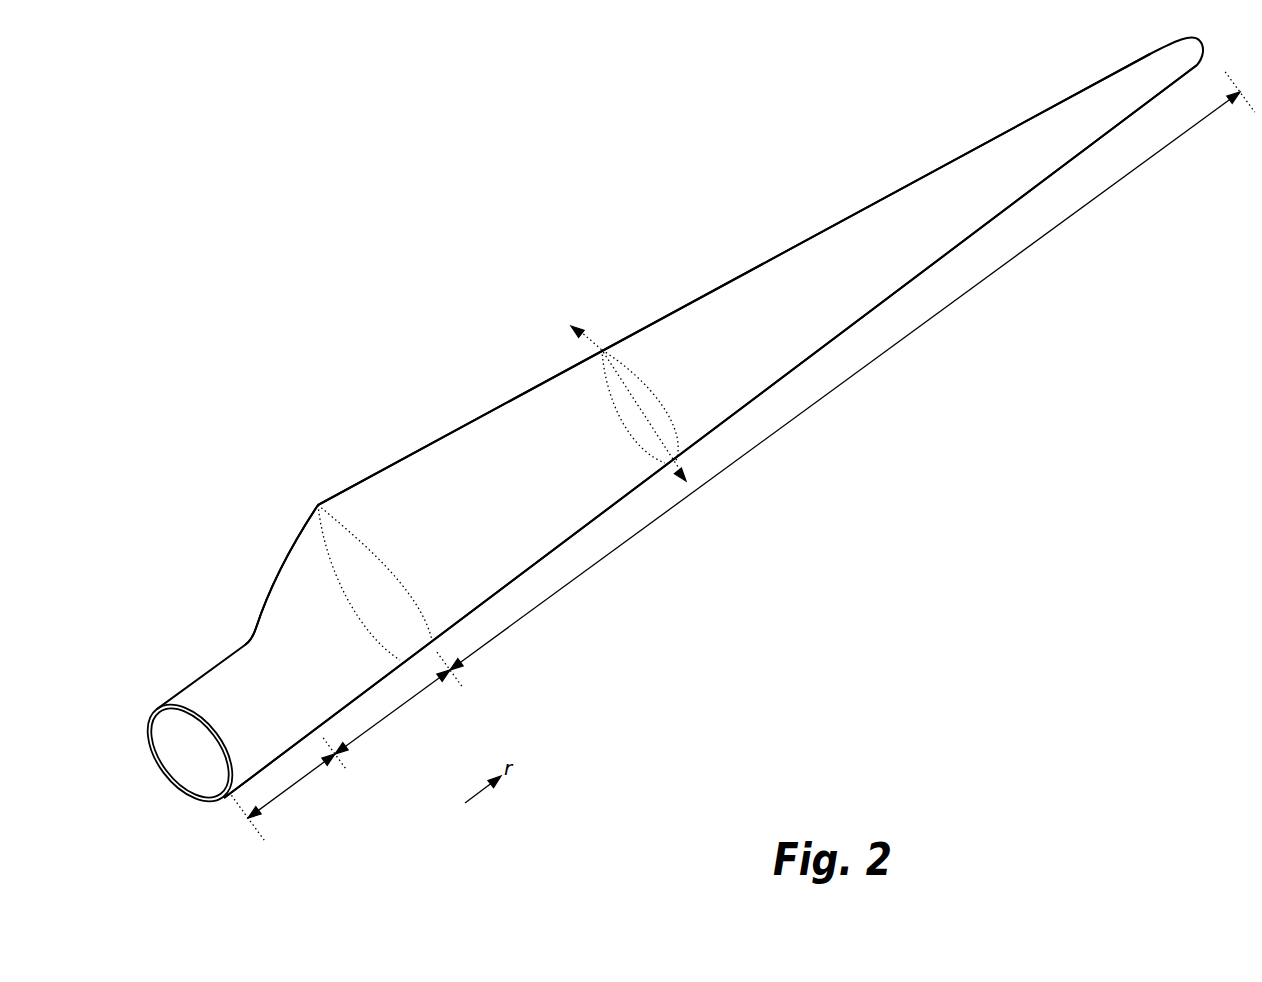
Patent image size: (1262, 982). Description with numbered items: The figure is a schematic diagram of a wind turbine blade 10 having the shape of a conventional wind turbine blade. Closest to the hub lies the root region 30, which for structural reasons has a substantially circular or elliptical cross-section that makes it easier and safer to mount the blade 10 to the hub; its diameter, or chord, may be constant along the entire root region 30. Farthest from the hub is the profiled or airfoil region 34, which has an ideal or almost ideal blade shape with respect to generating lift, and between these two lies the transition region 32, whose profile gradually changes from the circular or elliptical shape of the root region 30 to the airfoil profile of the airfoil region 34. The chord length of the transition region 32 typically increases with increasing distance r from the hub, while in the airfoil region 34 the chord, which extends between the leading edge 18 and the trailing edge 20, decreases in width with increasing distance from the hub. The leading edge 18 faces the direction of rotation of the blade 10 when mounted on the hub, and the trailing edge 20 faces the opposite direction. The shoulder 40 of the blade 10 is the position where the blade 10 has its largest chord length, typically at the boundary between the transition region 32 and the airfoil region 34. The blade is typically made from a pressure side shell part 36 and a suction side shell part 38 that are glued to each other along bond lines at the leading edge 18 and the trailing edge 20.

The wind turbine blade 10 is at (488, 279).
The leading edge 18 is at (883, 305).
The trailing edge 20 is at (720, 286).
The root region 30 is at (290, 790).
The transition region 32 is at (395, 713).
The airfoil region 34 is at (768, 440).
The pressure side shell part 36 is at (186, 709).
The suction side shell part 38 is at (152, 717).
The shoulder 40 is at (318, 505).